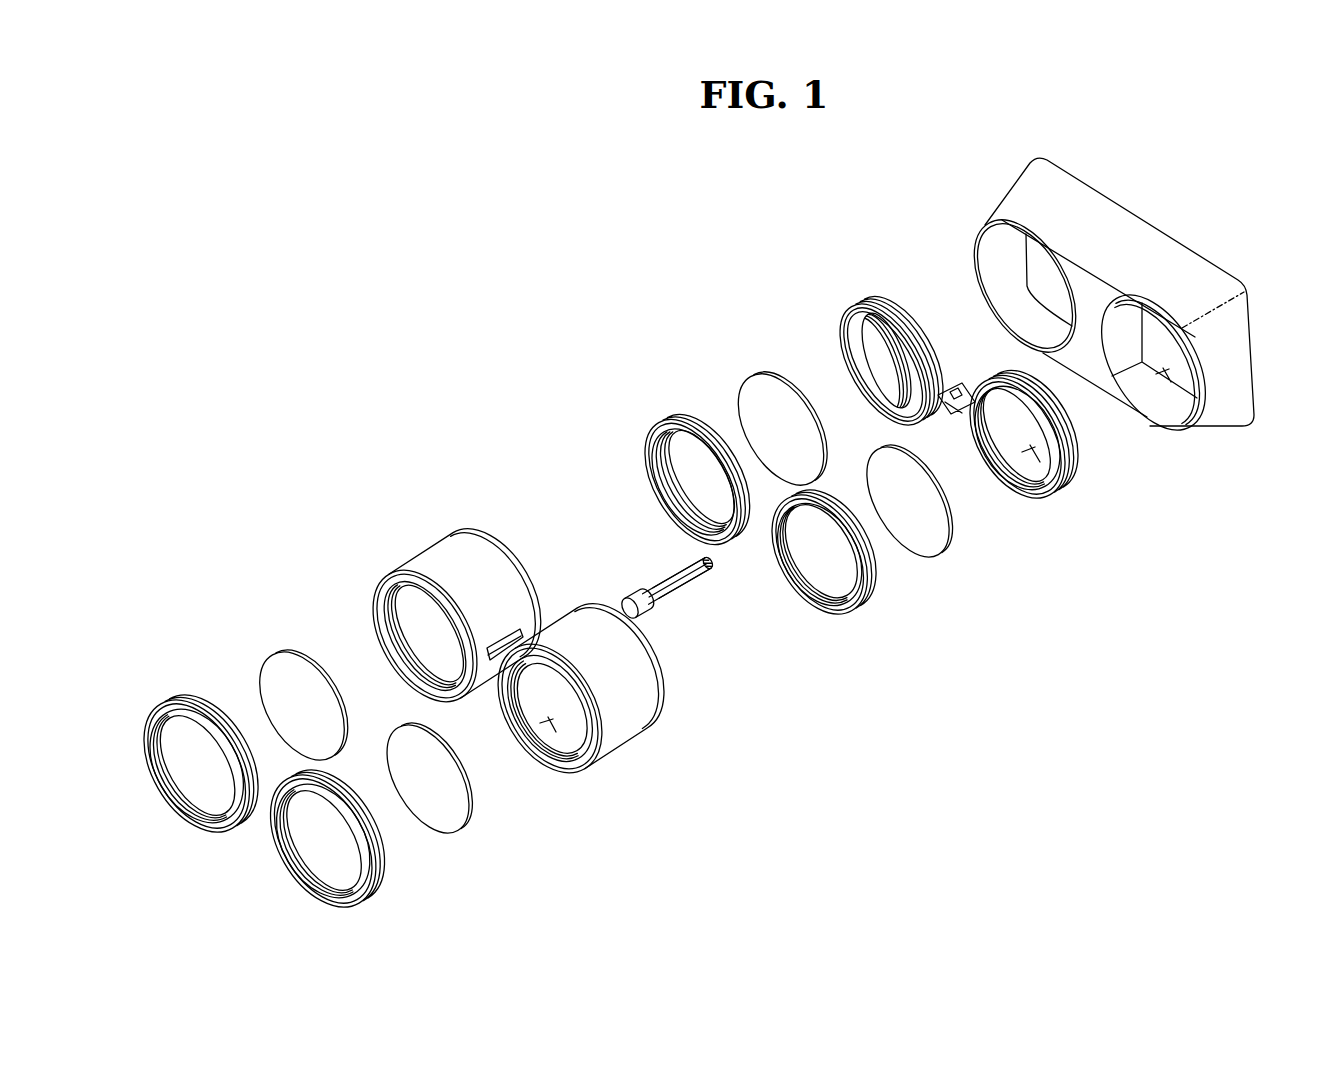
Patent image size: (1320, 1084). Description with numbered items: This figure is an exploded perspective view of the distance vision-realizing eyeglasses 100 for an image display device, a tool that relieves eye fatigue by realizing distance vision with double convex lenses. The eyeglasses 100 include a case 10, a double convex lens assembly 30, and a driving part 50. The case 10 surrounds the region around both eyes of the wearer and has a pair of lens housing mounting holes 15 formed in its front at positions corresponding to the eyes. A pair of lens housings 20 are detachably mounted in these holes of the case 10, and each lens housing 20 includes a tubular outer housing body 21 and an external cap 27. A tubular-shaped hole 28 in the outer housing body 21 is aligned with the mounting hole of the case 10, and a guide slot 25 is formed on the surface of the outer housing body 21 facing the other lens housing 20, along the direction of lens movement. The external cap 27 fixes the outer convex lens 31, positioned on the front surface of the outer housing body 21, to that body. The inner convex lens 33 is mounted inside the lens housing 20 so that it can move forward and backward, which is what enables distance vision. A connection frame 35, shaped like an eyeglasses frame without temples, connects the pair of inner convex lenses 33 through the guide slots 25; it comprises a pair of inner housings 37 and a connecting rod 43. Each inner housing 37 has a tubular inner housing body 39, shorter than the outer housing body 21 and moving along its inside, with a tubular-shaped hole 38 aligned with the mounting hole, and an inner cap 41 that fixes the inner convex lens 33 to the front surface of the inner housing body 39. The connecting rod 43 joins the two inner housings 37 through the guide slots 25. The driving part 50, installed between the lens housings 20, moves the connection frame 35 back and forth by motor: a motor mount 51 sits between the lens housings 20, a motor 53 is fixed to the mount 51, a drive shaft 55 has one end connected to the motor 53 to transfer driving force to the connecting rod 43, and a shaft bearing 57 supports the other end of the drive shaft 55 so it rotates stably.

The case 10 is at (1103, 337).
The lens mounting hole 15 is at (1160, 380).
The lens housing 20 is at (581, 709).
The outer housing body 21 is at (640, 730).
The guide slot 25 is at (500, 634).
The external cap 27 is at (295, 873).
The tubular-shaped hole 28 is at (526, 745).
The double convex lens assembly 30 is at (663, 413).
The outer convex lens 31 is at (468, 833).
The inner convex lens 33 is at (778, 372).
The connection frame 35 is at (902, 293).
The inner housing 37 is at (1006, 630).
The tubular-shaped hole 38 is at (1052, 476).
The inner housing body 39 is at (1003, 492).
The inner cap 41 is at (858, 613).
The connecting rod 43 is at (943, 416).
The driving part 50 is at (675, 607).
The motor mount 51 is at (682, 578).
The motor 53 is at (637, 603).
The drive shaft 55 is at (677, 581).
The shaft bearing 57 is at (707, 563).
The distance vision-realizing eyeglasses 100 is at (537, 392).